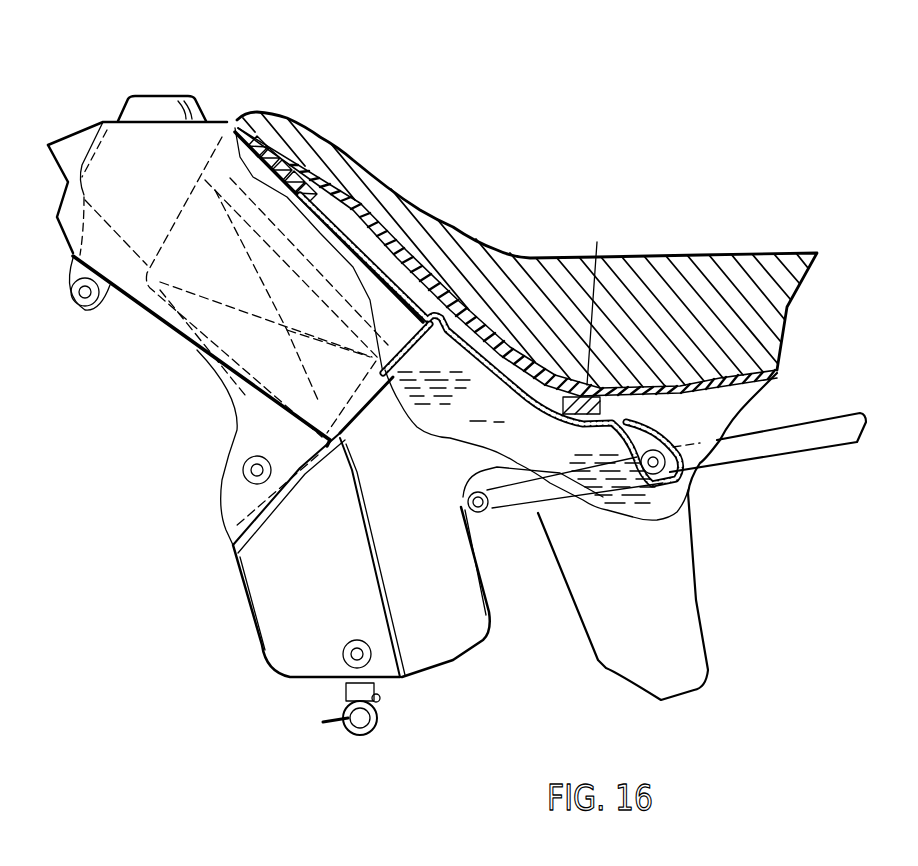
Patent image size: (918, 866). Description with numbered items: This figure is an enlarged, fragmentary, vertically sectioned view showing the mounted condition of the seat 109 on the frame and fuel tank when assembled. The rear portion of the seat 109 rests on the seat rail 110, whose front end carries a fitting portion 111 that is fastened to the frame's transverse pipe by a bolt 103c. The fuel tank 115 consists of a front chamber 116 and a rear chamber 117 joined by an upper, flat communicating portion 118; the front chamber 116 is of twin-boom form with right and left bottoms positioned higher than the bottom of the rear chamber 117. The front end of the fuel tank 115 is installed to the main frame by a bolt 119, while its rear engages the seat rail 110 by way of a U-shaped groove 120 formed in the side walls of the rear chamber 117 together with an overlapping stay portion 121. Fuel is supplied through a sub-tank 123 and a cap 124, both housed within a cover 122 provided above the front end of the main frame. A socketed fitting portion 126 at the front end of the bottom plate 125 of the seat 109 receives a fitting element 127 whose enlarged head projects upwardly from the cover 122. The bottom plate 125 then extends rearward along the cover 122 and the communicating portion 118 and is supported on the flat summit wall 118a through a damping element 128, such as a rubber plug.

The bolt 103c is at (481, 513).
The seat 109 is at (700, 253).
The seat rail 110 is at (777, 450).
The fitting portion 111 is at (484, 512).
The fuel tank 115 is at (253, 627).
The front chamber 116 is at (445, 648).
The rear chamber 117 is at (609, 657).
The upper communicating portion 118 is at (617, 403).
The flat summit wall 118a is at (506, 425).
The bolt 119 is at (243, 471).
The groove 120 is at (533, 505).
The stay portion 121 is at (672, 440).
The cover 122 is at (385, 240).
The sub-tank 123 is at (62, 215).
The cap 124 is at (165, 93).
The bottom plate 125 is at (437, 285).
The socketed fitting portion 126 is at (295, 183).
The fitting element 127 is at (331, 158).
The damping element 128 is at (597, 242).